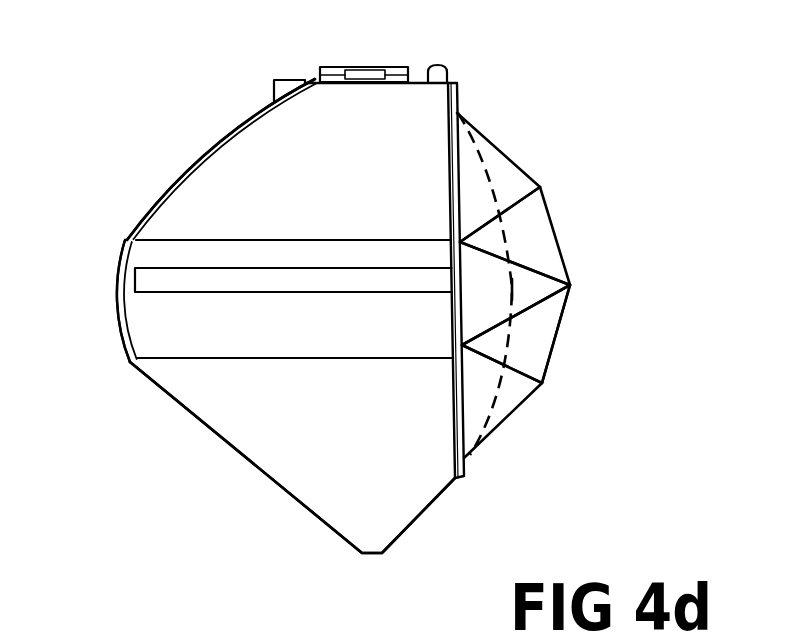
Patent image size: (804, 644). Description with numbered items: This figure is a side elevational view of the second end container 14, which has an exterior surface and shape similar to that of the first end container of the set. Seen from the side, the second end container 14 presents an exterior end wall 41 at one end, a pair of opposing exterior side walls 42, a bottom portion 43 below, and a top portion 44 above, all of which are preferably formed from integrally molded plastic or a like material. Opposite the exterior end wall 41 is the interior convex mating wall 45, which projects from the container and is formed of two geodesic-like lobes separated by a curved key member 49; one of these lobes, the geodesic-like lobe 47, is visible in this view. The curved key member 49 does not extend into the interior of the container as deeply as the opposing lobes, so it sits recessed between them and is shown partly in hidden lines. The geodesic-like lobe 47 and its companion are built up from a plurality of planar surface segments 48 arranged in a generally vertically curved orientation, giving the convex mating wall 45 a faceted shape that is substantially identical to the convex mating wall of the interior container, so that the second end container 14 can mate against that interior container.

The second end container 14 is at (153, 94).
The exterior end wall 41 is at (121, 267).
The exterior side walls 42 is at (235, 199).
The bottom portion 43 is at (438, 503).
The top portion 44 is at (423, 82).
The interior convex mating wall 45 is at (640, 265).
The geodesic-like lobe 47 is at (567, 318).
The planar surface segments 48 is at (530, 233).
The curved key member 49 is at (514, 291).